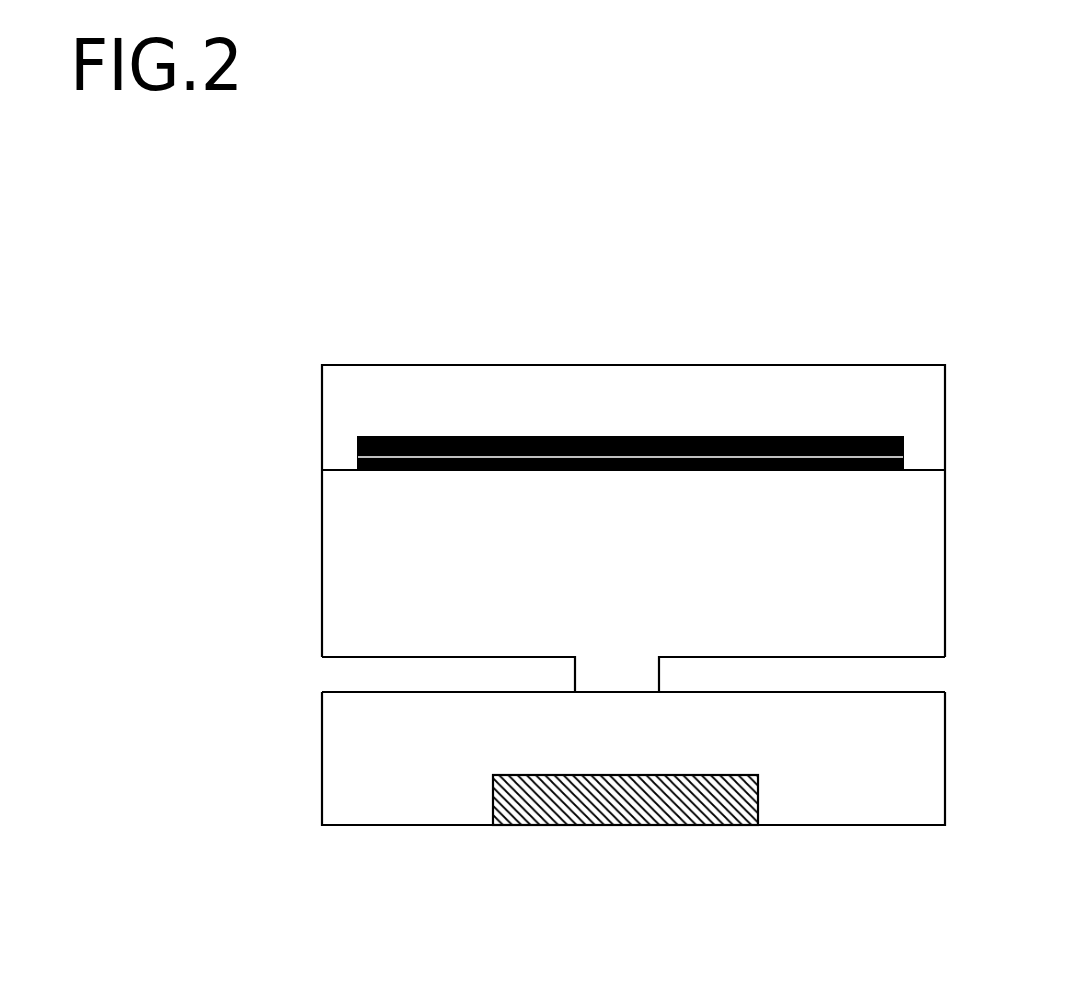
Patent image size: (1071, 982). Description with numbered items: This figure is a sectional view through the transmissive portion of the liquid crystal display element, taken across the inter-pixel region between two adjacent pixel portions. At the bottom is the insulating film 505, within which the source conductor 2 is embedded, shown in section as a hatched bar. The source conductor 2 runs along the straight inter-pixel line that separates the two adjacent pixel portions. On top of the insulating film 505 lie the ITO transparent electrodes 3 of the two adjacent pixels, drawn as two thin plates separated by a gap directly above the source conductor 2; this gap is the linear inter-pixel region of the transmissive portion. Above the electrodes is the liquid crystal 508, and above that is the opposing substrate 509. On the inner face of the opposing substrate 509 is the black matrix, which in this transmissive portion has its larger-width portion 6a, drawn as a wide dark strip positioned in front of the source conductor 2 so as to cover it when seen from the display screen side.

The opposing substrate 509 is at (378, 398).
The larger-width portion 6a is at (690, 437).
The liquid crystal 508 is at (378, 580).
The ITO transparent electrode 3 is at (360, 674).
The insulating film 505 is at (378, 766).
The source conductor 2 is at (633, 810).